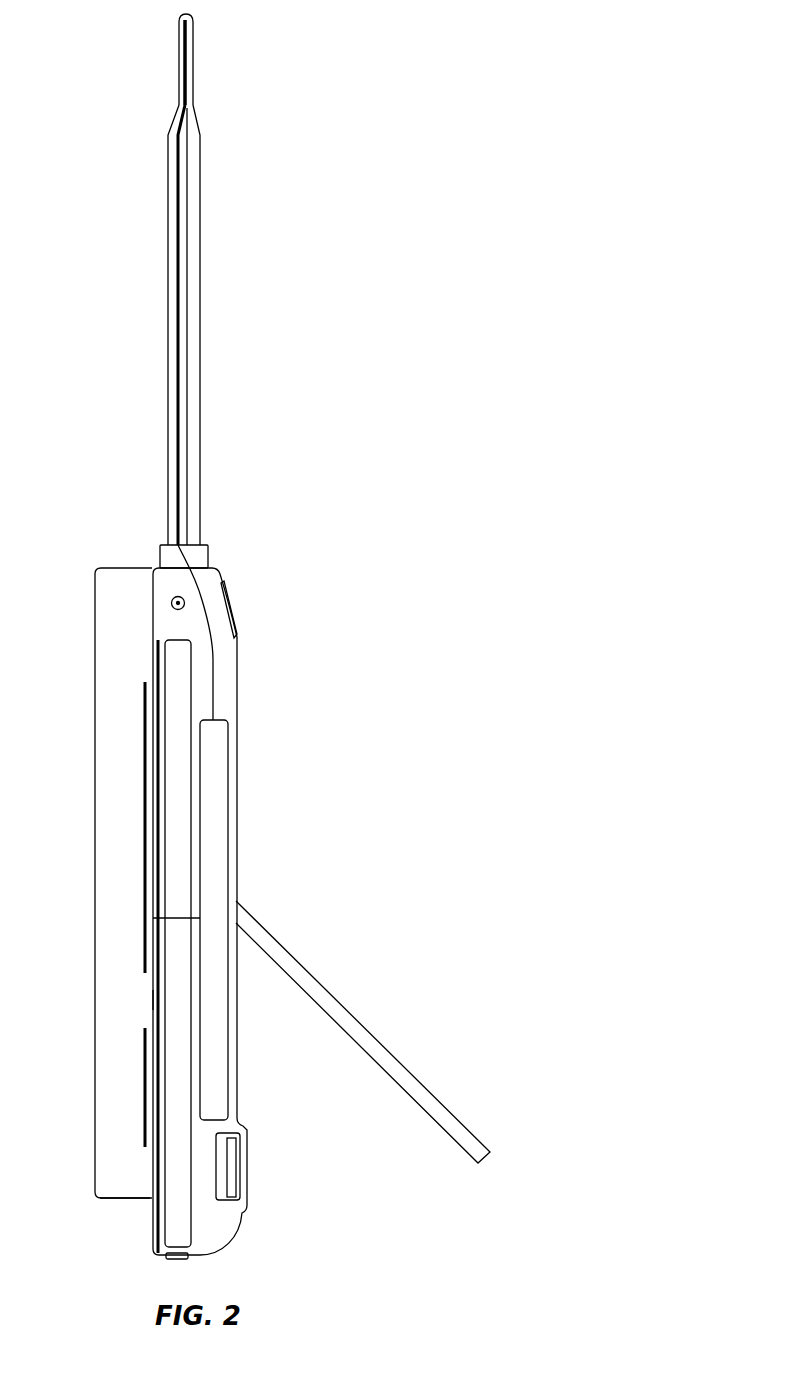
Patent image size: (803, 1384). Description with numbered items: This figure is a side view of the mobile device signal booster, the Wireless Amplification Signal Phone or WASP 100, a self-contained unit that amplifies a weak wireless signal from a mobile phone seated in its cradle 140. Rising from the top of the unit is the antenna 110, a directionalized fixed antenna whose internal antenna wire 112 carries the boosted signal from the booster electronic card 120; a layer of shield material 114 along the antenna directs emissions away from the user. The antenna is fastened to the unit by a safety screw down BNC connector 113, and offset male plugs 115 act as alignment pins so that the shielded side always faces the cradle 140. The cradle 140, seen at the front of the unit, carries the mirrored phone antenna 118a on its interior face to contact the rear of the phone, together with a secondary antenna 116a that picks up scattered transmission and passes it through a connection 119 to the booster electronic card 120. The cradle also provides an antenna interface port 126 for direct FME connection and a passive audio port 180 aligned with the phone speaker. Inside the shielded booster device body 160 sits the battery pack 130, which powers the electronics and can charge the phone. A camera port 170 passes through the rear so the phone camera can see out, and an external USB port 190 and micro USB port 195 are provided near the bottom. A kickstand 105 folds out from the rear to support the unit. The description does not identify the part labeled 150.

The Wireless Amplification Signal Phone (WASP) 100 is at (390, 503).
The kickstand 105 is at (355, 1015).
The antenna 110 is at (188, 62).
The antenna wire 112 is at (190, 283).
The safety screw down BNC connector 113 is at (208, 560).
The shield material 114 is at (178, 374).
The offset male plugs 115 is at (183, 566).
The hinge groove 116a is at (153, 1002).
The mirrored phone antenna 118a is at (143, 1035).
The connection 119 is at (178, 918).
The booster electronic card 120 is at (215, 790).
The antenna interface port 126 is at (171, 600).
The battery pack 130 is at (178, 682).
The cradle 140 is at (95, 845).
The housing 150 is at (237, 852).
The shielded booster device body 160 is at (152, 662).
The camera port 170 is at (233, 610).
The passive audio port 180 is at (120, 1202).
The external USB port 190 is at (234, 1167).
The micro USB port 195 is at (180, 1260).